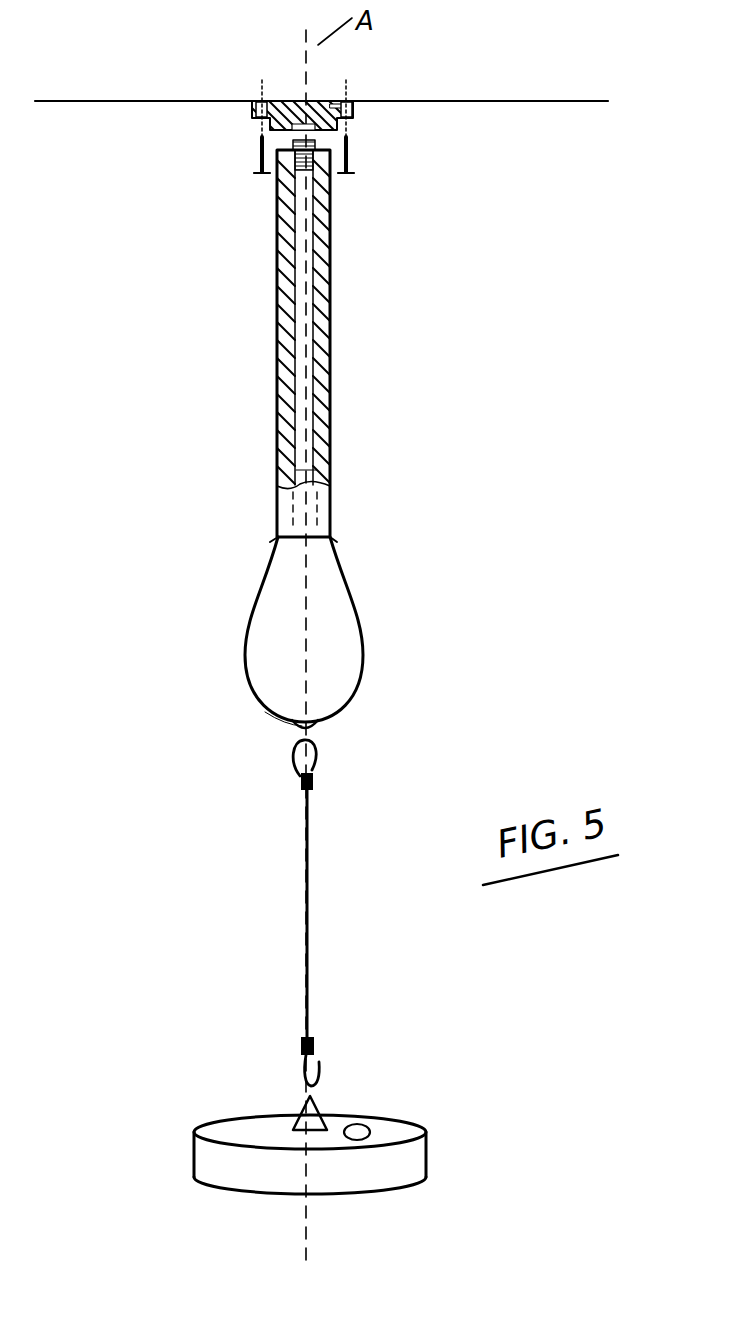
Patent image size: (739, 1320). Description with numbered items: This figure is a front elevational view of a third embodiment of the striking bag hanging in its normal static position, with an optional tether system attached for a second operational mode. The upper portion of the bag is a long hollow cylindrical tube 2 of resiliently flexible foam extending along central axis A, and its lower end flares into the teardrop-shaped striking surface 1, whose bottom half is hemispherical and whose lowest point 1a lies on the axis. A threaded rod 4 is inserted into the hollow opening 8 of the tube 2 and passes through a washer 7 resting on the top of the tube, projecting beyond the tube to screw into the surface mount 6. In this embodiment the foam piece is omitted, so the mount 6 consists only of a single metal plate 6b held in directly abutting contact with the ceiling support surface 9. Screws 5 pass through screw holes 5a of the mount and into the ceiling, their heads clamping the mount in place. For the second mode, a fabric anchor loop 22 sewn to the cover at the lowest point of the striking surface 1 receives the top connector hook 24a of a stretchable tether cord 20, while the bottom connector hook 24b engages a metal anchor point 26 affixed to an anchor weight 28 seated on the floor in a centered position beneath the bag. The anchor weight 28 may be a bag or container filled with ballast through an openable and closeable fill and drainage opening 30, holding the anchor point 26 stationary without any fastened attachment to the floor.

The striking surface 1 is at (345, 672).
The lower end of body 1a is at (282, 733).
The cylindrical tube 2 is at (332, 283).
The threaded rod 4 is at (307, 153).
The screws 5 is at (370, 162).
The pin holes 5a is at (356, 101).
The surface mount 6 is at (249, 118).
The metal plate 6b is at (352, 112).
The washer 7 is at (278, 172).
The hollow opening 8 is at (298, 468).
The support surface 9 is at (518, 102).
The tether cord 20 is at (312, 892).
The fabric anchor loop 22 is at (318, 728).
The top connector hook 24a is at (318, 758).
The bottom connector hook 24b is at (300, 1068).
The anchor point 26 is at (316, 1100).
The anchor weight 28 is at (385, 1130).
The fill and drainage opening 30 is at (358, 1128).